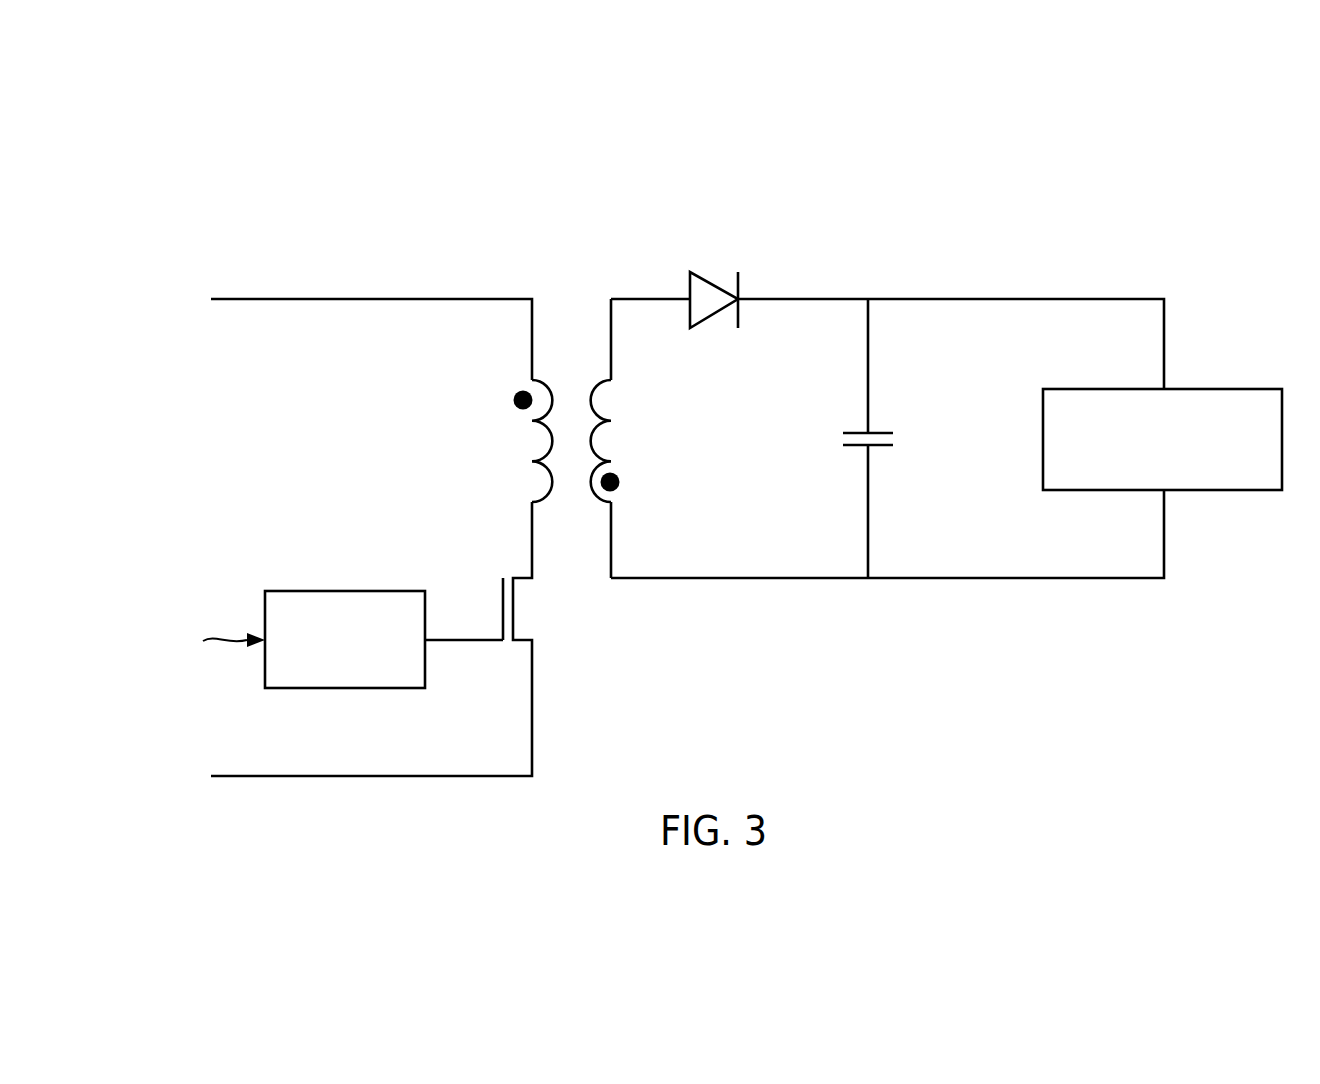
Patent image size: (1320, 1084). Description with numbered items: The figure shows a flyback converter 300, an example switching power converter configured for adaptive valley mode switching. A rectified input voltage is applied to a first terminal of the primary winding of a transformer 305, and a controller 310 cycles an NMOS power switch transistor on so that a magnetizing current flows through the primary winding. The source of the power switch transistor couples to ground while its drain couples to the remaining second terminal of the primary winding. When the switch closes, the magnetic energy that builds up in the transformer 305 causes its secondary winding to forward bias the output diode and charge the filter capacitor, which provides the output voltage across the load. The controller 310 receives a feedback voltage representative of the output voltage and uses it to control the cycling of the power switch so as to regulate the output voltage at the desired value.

The flyback converter 300 is at (904, 188).
The transformer 305 is at (570, 258).
The controller 310 is at (345, 591).